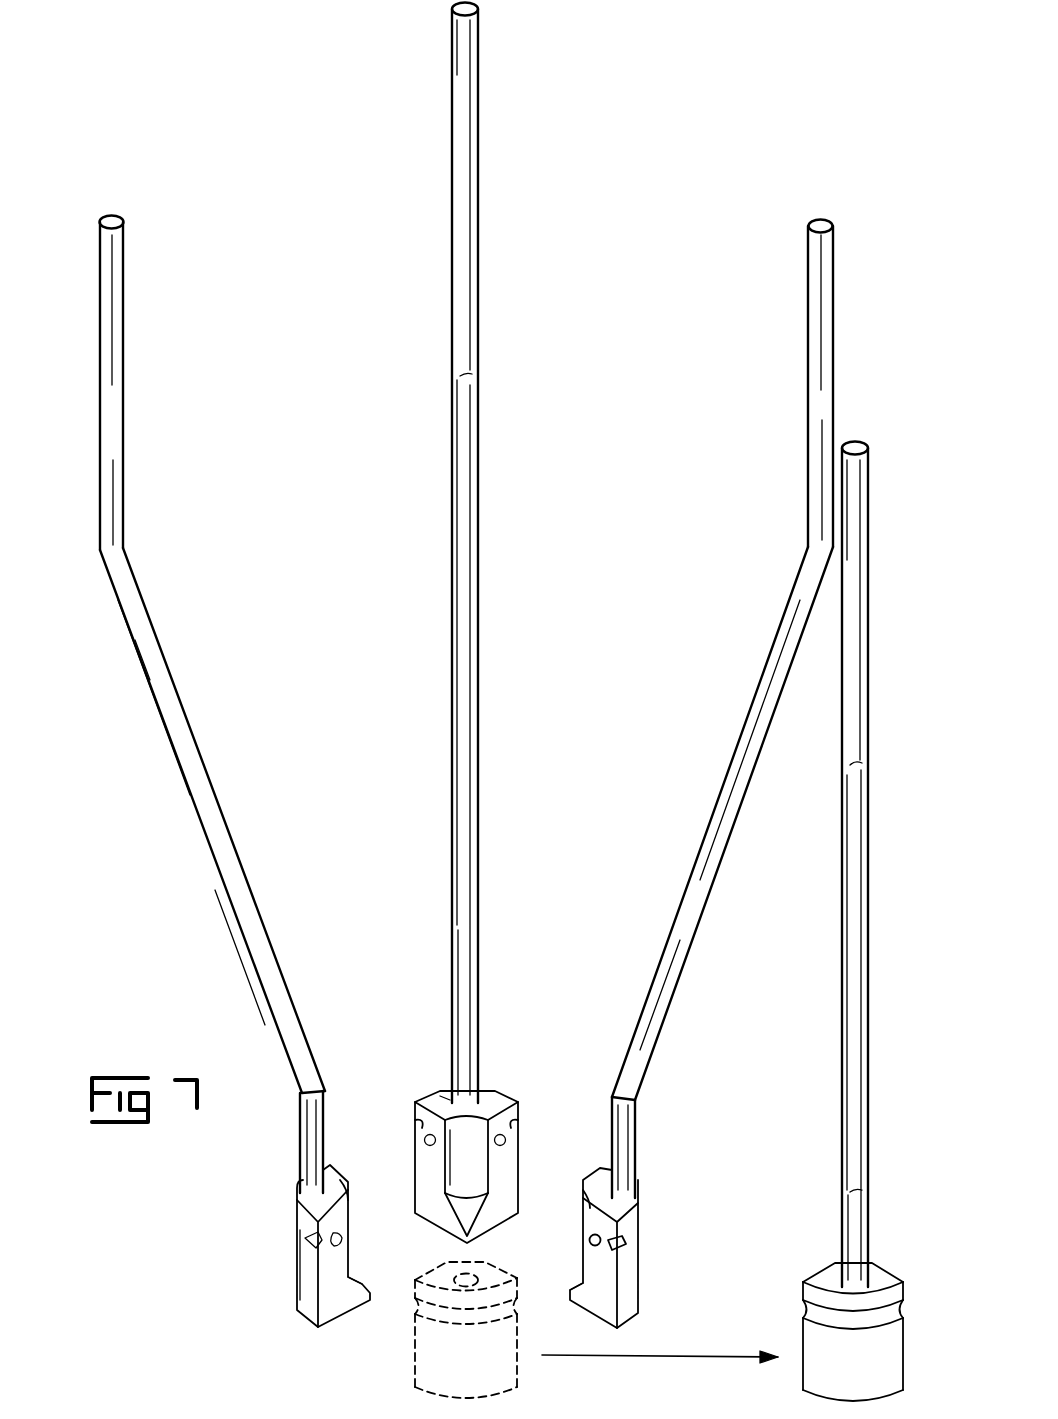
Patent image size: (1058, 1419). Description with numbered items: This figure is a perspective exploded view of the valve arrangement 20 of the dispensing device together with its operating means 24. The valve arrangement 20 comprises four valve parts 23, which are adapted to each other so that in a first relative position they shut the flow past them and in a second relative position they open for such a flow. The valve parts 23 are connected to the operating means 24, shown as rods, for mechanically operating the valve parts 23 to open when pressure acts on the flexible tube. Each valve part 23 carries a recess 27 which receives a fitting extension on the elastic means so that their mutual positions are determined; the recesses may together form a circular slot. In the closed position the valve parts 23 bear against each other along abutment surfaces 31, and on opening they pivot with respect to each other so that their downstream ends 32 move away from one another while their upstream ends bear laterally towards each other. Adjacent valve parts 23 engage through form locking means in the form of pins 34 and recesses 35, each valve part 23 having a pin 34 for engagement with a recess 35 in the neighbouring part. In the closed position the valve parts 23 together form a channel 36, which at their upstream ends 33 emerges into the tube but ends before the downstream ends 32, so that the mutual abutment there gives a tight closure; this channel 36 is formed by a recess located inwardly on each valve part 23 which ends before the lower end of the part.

The valve arrangement 20 is at (497, 705).
The valve part 23 is at (561, 1216).
The operating means 24 is at (222, 835).
The recess 27 is at (300, 1245).
The abutment surface 31 is at (330, 1281).
The downstream end 32 is at (352, 1305).
The upstream end 33 is at (440, 1112).
The pin 34 is at (420, 1145).
The recess 35 is at (503, 1147).
The channel 36 is at (458, 1160).